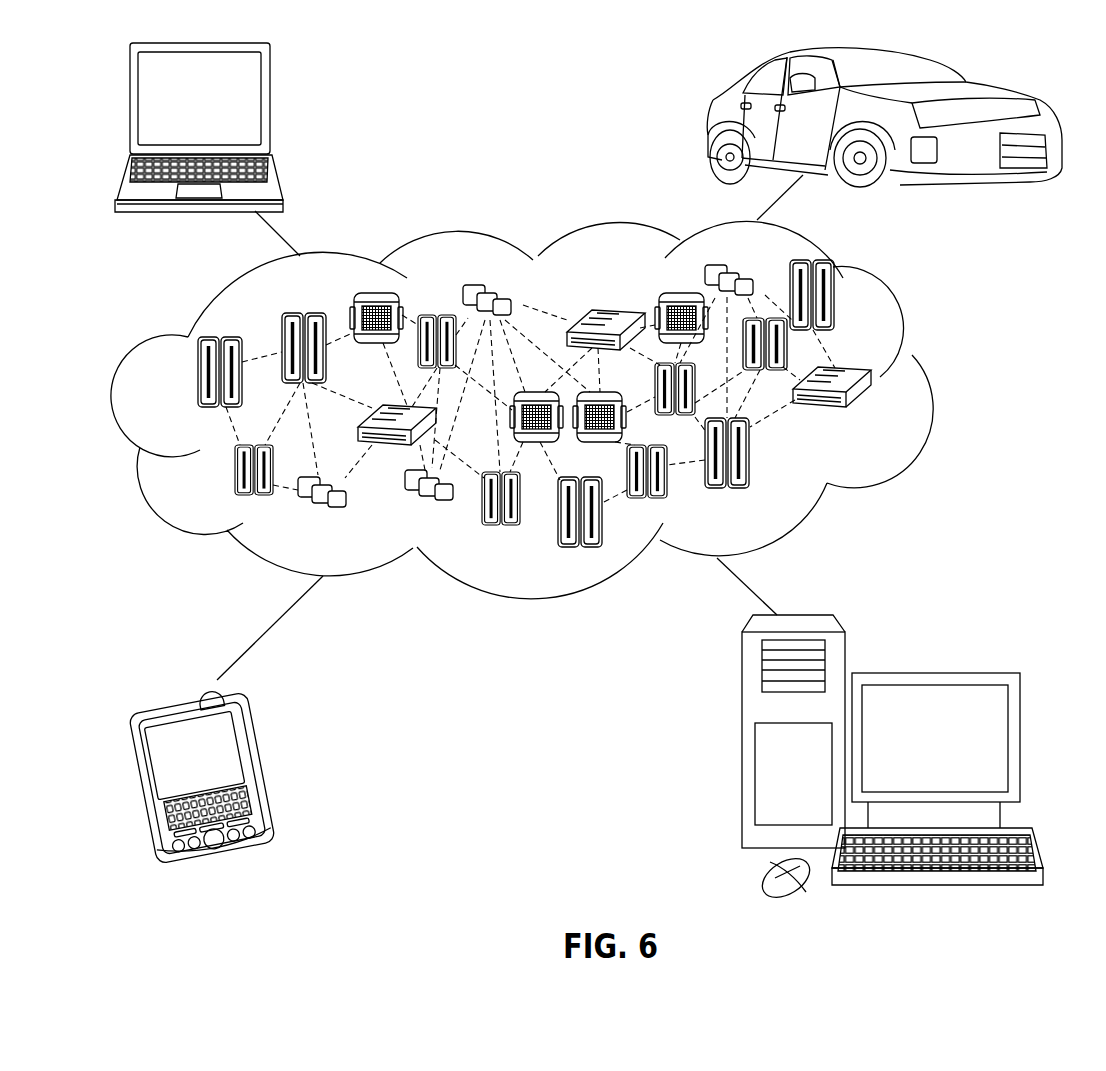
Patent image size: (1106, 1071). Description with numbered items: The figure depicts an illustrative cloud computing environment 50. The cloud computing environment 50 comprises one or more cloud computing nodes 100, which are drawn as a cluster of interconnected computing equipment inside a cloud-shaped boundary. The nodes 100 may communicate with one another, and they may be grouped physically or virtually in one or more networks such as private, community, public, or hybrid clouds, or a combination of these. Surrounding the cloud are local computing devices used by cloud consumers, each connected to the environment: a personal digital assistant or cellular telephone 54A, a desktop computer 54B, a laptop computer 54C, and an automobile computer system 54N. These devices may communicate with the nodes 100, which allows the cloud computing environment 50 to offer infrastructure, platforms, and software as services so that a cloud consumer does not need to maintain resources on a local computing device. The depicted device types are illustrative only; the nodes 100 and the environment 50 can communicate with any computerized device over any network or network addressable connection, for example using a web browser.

The cloud computing environment 50 is at (930, 380).
The cloud computing nodes 100 is at (875, 413).
The personal digital assistant (PDA) or cellular telephone 54A is at (258, 767).
The desktop computer 54B is at (930, 672).
The laptop computer 54C is at (272, 108).
The automobile computer system 54N is at (712, 127).